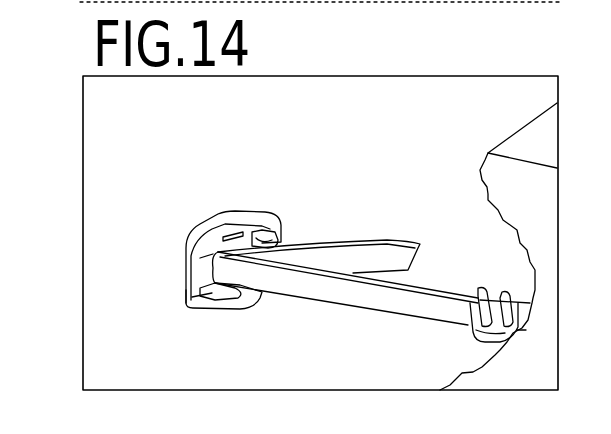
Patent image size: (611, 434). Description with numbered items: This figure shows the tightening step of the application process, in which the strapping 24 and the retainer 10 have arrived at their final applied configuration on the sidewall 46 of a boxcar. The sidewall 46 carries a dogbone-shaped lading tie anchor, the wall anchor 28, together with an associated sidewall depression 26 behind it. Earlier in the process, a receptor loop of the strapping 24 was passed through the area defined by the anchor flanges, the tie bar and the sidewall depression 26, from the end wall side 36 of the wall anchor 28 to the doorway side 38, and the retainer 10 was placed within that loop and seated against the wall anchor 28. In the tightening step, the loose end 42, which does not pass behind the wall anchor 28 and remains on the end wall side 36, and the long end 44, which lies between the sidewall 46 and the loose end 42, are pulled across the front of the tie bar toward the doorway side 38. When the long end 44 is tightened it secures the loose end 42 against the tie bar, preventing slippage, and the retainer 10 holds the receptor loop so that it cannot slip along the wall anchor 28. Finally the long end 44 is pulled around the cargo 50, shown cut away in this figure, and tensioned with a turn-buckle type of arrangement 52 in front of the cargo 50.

The retainer 10 is at (257, 237).
The strapping 24 is at (368, 316).
The sidewall depression 26 is at (205, 264).
The wall anchor 28 is at (220, 307).
The end wall side 36 is at (135, 166).
The doorway side 38 is at (312, 174).
The loose end 42 is at (398, 250).
The long end 44 is at (450, 300).
The sidewall 46 is at (482, 139).
The cargo 50 is at (545, 208).
The turn-buckle type of arrangement 52 is at (470, 306).